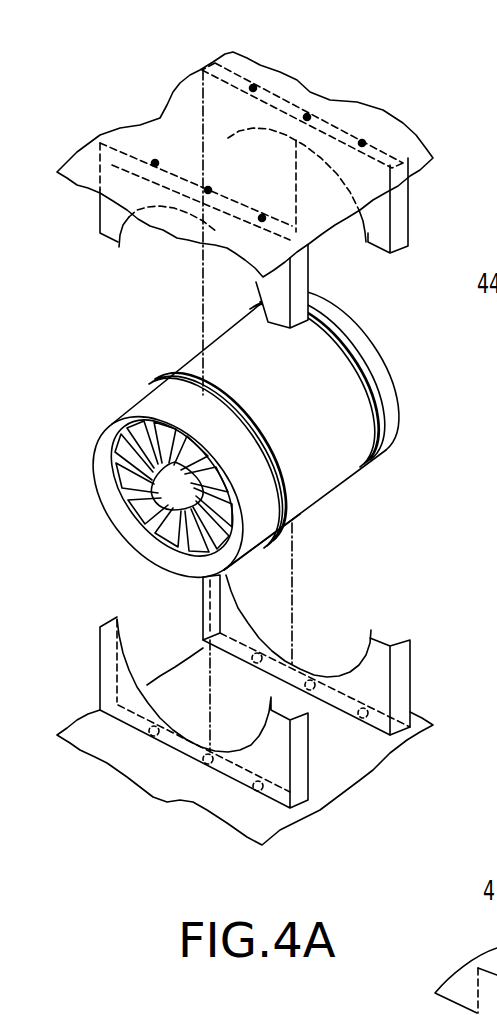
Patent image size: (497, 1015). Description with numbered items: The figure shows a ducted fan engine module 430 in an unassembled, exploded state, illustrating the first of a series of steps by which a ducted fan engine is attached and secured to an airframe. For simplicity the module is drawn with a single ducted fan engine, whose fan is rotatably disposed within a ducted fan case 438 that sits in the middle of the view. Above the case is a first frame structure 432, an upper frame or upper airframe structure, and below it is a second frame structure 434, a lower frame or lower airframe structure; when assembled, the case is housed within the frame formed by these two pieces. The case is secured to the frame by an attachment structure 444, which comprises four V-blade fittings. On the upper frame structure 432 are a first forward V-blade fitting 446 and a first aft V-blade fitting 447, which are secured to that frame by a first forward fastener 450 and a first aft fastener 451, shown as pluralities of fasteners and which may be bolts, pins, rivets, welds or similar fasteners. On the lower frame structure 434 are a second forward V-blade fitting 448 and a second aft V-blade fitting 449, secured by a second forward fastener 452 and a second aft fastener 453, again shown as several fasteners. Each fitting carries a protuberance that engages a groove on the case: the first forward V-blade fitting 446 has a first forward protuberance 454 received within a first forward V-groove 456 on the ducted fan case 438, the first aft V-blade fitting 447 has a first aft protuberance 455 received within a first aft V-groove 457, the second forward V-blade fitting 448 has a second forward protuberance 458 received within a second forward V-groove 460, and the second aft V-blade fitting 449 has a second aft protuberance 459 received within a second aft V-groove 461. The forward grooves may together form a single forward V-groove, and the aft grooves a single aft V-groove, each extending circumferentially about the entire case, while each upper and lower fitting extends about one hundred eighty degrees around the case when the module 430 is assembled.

The ducted fan engine module 430 is at (238, 440).
The first frame structure 432 is at (256, 66).
The second frame structure 434 is at (360, 775).
The ducted fan case 438 is at (327, 473).
The attachment structure 444 is at (113, 230).
The first forward V-blade fitting 446 is at (110, 207).
The first aft V-blade fitting 447 is at (402, 208).
The second forward V-blade fitting 448 is at (117, 693).
The second aft V-blade fitting 449 is at (400, 675).
The first forward fastener 450 is at (208, 192).
The first aft fastener 451 is at (362, 143).
The second forward fastener 452 is at (208, 764).
The second aft fastener 453 is at (310, 685).
The first forward protuberance 454 is at (197, 213).
The first aft protuberance 455 is at (340, 177).
The first forward V-groove 456 is at (143, 383).
The first aft V-groove 457 is at (340, 348).
The second forward protuberance 458 is at (238, 753).
The second aft protuberance 459 is at (357, 670).
The second forward V-groove 460 is at (280, 540).
The second aft V-groove 461 is at (372, 453).